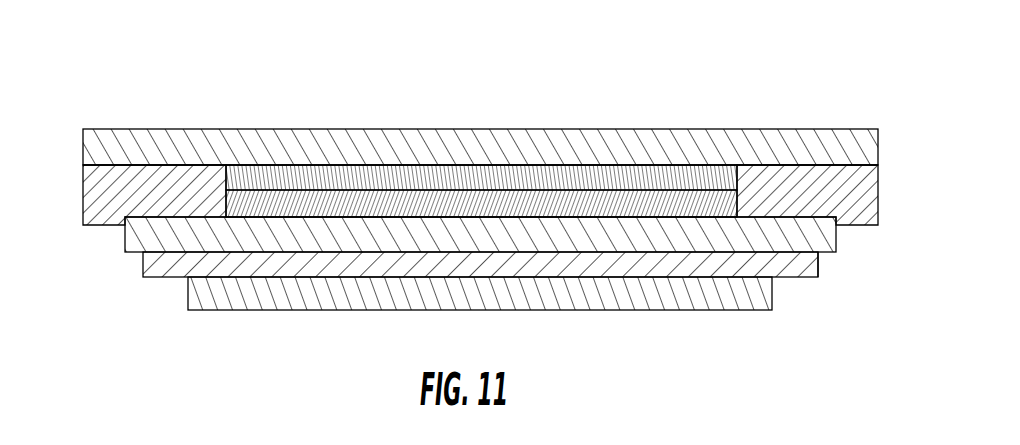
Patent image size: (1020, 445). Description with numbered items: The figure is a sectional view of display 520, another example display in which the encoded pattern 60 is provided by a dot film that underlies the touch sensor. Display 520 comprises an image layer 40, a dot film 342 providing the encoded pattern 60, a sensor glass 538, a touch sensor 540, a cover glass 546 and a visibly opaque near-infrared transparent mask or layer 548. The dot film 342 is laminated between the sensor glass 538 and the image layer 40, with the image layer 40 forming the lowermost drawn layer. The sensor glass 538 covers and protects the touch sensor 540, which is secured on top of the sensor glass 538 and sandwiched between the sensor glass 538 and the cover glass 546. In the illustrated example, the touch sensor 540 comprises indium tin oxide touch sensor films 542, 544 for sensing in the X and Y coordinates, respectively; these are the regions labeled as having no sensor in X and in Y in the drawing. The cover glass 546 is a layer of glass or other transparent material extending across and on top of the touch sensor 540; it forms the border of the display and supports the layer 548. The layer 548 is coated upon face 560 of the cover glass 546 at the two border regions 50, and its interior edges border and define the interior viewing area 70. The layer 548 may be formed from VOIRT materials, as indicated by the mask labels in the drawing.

The display 520 is at (87, 69).
The bezel region 50 is at (83, 108).
The interior viewing area 70 is at (226, 108).
The touch sensor film 542 is at (590, 165).
The touch sensor 540 is at (706, 165).
The face of cover glass 560 is at (117, 163).
The cover glass 546 is at (878, 148).
The visibly opaque near-infrared transparent layer 548 is at (83, 192).
The sensor glass 538 is at (125, 237).
The dot film 342 is at (143, 268).
The image layer 40 is at (188, 297).
The encoded pattern 60 is at (818, 262).
The touch sensor film 544 is at (670, 216).